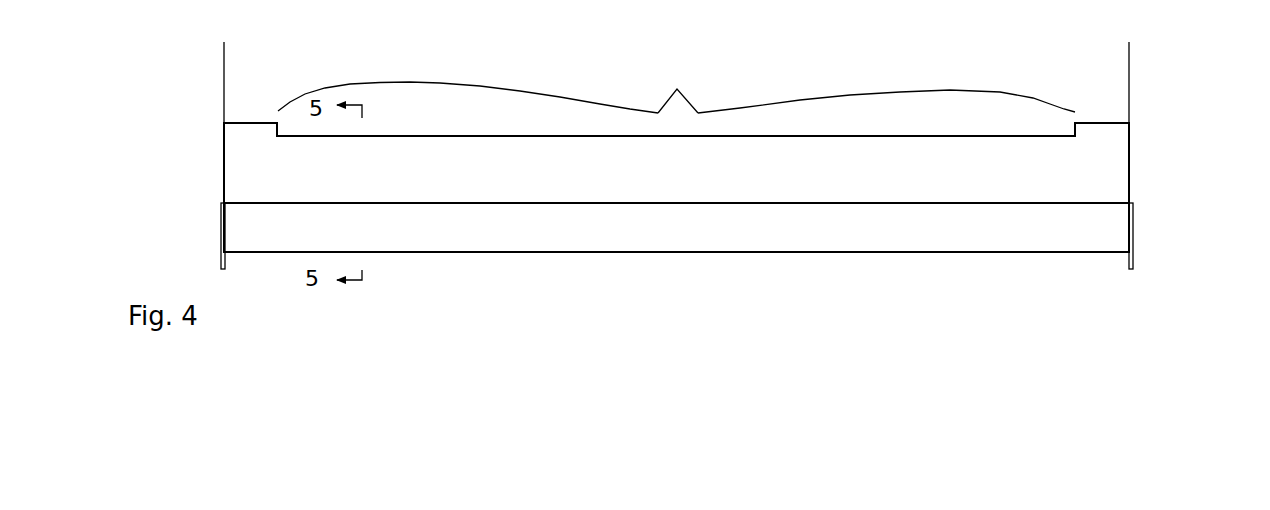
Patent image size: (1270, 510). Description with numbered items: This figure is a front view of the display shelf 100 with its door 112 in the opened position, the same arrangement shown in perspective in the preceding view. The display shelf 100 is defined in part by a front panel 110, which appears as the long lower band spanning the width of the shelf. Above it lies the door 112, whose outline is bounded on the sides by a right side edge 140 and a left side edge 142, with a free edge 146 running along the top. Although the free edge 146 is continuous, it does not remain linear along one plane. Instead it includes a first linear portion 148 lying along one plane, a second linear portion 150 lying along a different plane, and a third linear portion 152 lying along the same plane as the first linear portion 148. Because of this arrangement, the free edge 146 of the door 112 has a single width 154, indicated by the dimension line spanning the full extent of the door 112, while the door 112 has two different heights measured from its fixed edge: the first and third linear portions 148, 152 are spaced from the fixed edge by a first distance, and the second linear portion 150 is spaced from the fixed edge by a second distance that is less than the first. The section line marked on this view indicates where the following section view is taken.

The display shelf 100 is at (1147, 123).
The front panel 110 is at (622, 233).
The door 112 is at (1133, 173).
The right side edge 140 is at (1132, 188).
The left side edge 142 is at (224, 152).
The free edge 146 is at (923, 130).
The first linear portion 148 is at (1129, 119).
The second linear portion 150 is at (678, 88).
The third linear portion 152 is at (277, 119).
The width 154 is at (1129, 53).